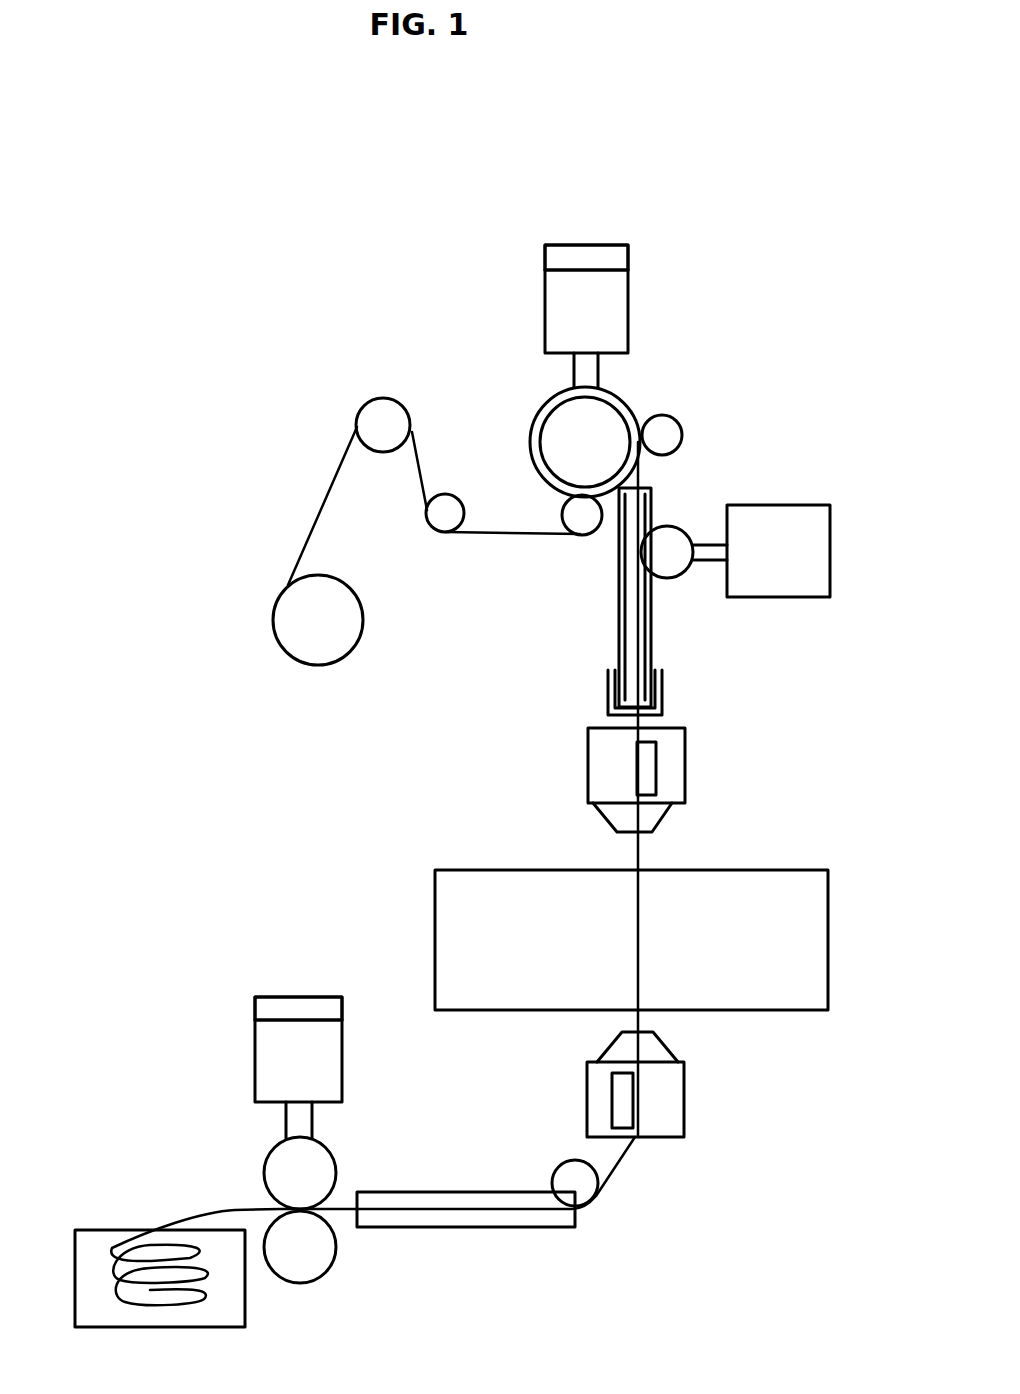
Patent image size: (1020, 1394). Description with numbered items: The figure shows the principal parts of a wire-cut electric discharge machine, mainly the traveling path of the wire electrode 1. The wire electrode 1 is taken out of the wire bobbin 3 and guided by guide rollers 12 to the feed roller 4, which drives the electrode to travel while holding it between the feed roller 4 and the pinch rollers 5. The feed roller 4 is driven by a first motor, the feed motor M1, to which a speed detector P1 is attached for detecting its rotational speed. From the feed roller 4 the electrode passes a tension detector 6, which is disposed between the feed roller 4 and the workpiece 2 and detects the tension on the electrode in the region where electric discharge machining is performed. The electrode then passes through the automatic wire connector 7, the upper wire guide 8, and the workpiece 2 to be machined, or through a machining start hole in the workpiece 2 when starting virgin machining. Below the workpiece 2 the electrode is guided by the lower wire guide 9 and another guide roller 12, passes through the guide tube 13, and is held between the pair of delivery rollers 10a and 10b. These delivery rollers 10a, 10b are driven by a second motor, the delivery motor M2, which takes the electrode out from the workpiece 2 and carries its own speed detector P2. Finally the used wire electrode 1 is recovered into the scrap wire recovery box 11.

The wire electrode 1 is at (645, 852).
The workpiece 2 is at (485, 878).
The wire bobbin 3 is at (328, 652).
The feed roller 4 is at (537, 435).
The pinch rollers 5 is at (662, 420).
The tension detector 6 is at (770, 512).
The automatic wire connector 7 is at (648, 645).
The upper wire guide 8 is at (688, 730).
The lower wire guide 9 is at (668, 1108).
The delivery roller 10a is at (328, 1163).
The delivery roller 10b is at (320, 1275).
The scrap wire recovery box 11 is at (85, 1228).
The guide rollers 12 is at (367, 412).
The guide tube 13 is at (450, 1222).
The feed motor M1 is at (618, 330).
The delivery motor M2 is at (255, 1062).
The speed detector P1 is at (582, 250).
The speed detector P2 is at (258, 998).